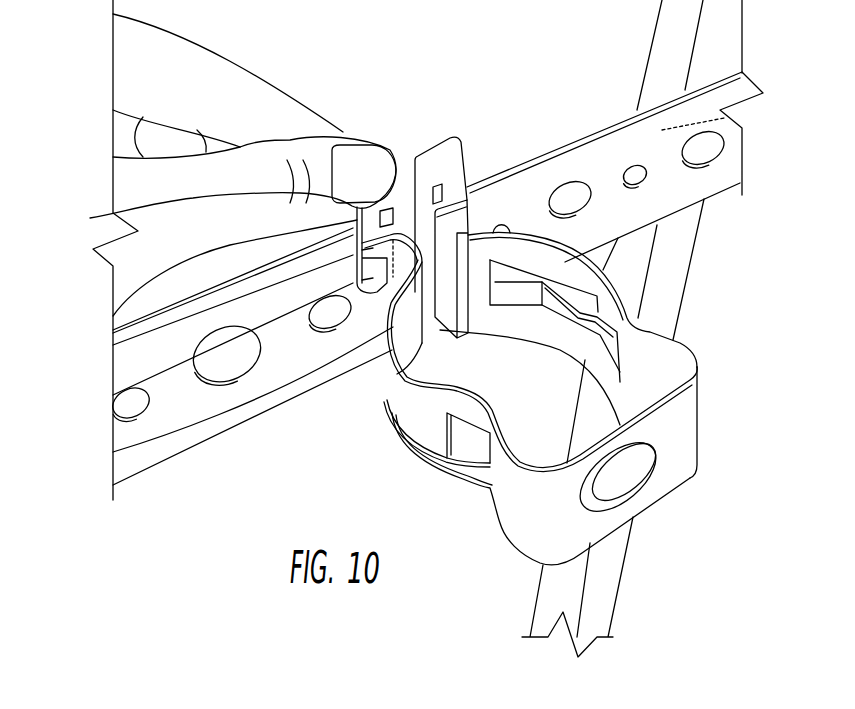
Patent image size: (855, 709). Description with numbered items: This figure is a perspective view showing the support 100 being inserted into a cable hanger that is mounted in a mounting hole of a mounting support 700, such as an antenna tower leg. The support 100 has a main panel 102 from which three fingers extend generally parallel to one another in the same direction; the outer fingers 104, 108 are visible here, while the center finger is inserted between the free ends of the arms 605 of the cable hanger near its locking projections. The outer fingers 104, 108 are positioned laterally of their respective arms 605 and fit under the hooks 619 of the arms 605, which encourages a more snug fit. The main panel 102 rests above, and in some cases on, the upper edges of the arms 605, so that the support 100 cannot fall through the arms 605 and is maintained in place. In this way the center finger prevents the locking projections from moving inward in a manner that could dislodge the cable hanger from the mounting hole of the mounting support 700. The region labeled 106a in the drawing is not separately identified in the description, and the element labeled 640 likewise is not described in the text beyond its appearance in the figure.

The support 100 is at (112, 217).
The main panel 102 is at (410, 180).
The finger 104 is at (112, 395).
The aperture 106a is at (112, 452).
The finger 108 is at (465, 185).
The hooks 619 is at (112, 345).
The arms 605 is at (567, 243).
The clamp 640 is at (667, 360).
The mounting support 700 is at (736, 120).